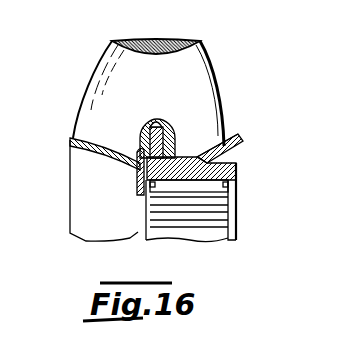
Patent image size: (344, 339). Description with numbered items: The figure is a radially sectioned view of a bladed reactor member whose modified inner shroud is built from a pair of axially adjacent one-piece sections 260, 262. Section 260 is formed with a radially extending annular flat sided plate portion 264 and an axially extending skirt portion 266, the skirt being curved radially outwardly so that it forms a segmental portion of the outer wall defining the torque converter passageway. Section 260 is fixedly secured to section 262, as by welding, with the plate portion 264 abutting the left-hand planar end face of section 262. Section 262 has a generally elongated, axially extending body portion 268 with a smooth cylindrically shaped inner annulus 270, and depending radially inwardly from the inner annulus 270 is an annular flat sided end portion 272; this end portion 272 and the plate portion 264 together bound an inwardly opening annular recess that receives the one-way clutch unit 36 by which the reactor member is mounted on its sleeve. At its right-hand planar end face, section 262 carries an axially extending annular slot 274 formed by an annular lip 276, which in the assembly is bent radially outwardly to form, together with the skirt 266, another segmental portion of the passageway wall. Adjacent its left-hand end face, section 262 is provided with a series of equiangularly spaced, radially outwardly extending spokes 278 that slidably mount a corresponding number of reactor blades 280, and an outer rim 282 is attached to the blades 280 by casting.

The one-way clutch unit 36 is at (163, 197).
The one-piece section 260 is at (70, 190).
The one-piece section 262 is at (237, 164).
The plate portion 264 is at (137, 182).
The skirt portion 266 is at (74, 138).
The body portion 268 is at (165, 123).
The inner annulus 270 is at (198, 180).
The end portion 272 is at (237, 181).
The annular slot 274 is at (225, 158).
The annular lip 276 is at (229, 144).
The spokes 278 is at (158, 139).
The reactor blades 280 is at (207, 62).
The outer rim 282 is at (165, 41).